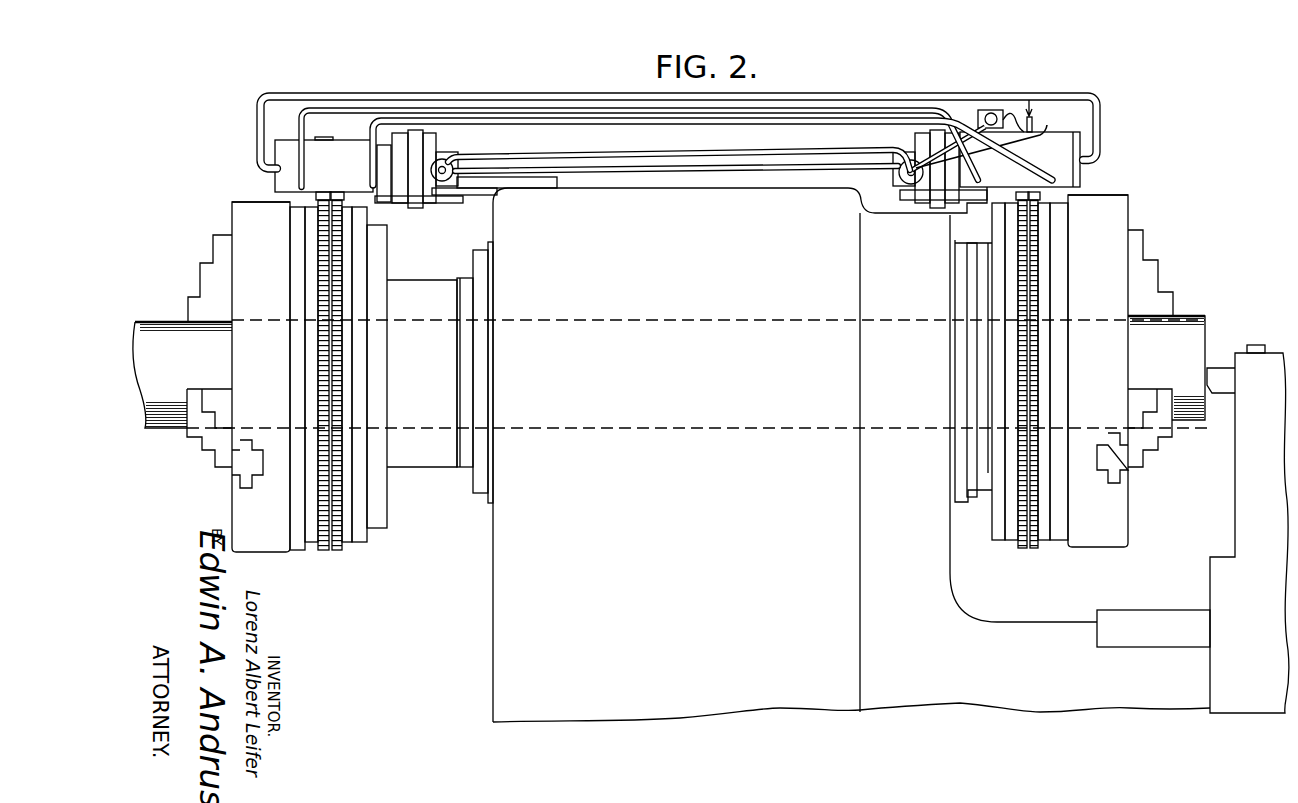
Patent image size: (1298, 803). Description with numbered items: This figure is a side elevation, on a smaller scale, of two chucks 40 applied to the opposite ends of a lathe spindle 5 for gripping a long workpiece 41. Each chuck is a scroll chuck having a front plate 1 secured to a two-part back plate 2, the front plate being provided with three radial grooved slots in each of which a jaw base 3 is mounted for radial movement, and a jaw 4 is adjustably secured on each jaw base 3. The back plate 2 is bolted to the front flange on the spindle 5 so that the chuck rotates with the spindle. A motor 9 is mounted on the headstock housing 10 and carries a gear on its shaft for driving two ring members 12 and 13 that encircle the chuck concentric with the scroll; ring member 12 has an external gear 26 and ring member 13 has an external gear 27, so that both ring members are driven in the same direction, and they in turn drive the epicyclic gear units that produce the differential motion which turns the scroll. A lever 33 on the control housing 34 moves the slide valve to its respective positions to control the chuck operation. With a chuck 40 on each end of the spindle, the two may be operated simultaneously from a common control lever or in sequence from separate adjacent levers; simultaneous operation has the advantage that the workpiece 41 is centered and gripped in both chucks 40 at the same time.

The front plate 1 is at (232, 213).
The back plate 2 is at (372, 216).
The jaw base 3 is at (248, 462).
The jaw 4 is at (203, 266).
The lathe spindle 5 is at (985, 493).
The motor 9 is at (432, 200).
The headstock housing 10 is at (881, 206).
The ring member 12 is at (348, 545).
The ring member 13 is at (318, 545).
The external gear 26 is at (1022, 548).
The external gear 27 is at (1035, 548).
The lever 33 is at (991, 110).
The control housing 34 is at (1068, 176).
The chuck 40 is at (239, 191).
The workpiece 41 is at (1208, 314).